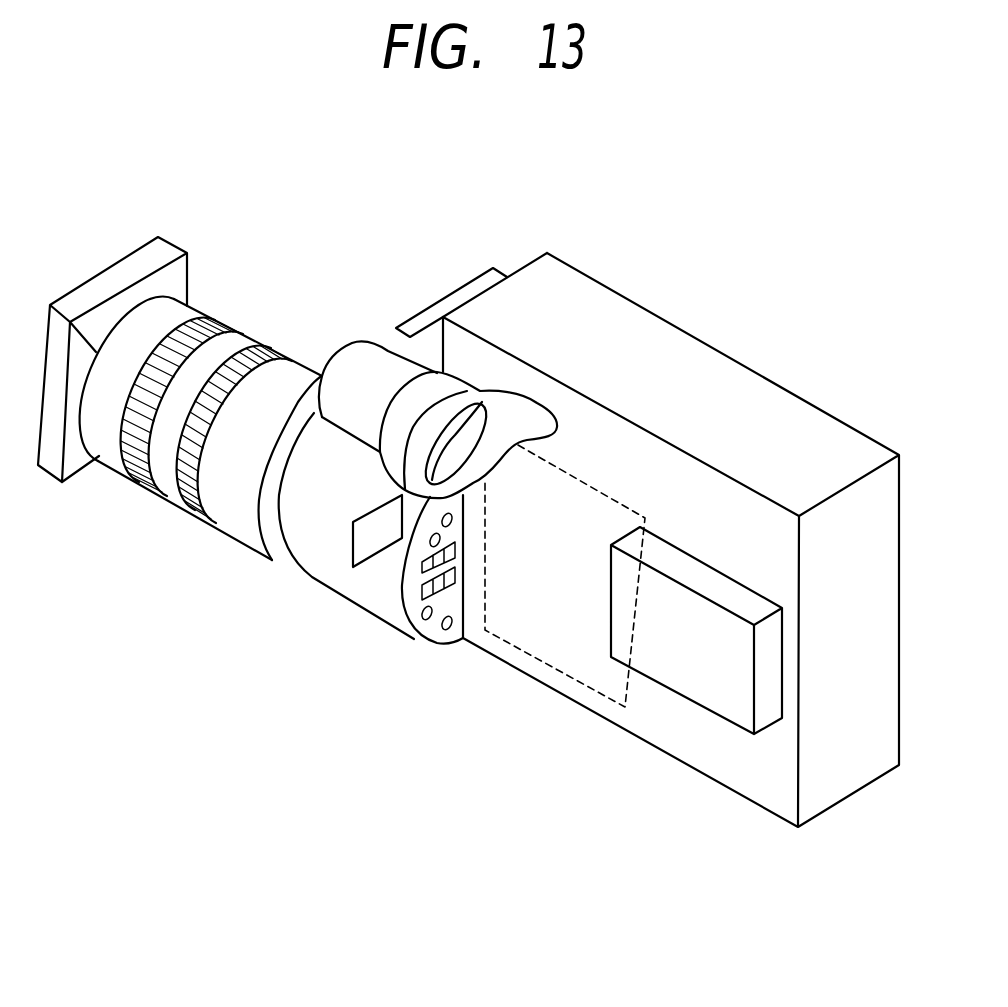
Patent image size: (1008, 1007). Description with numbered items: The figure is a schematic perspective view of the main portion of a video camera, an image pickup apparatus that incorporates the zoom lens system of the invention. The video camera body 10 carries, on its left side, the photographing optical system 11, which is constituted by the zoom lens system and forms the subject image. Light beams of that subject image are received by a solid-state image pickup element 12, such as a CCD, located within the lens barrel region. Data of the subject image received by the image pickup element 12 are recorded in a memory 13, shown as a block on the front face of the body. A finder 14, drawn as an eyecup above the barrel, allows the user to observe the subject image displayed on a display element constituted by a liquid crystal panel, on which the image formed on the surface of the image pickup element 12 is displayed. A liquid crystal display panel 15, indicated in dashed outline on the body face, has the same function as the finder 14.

The video camera body 10 is at (645, 327).
The photographing optical system 11 is at (247, 341).
The solid-state image pickup element 12 is at (352, 556).
The memory 13 is at (692, 680).
The finder 14 is at (420, 397).
The liquid crystal display panel 15 is at (528, 627).